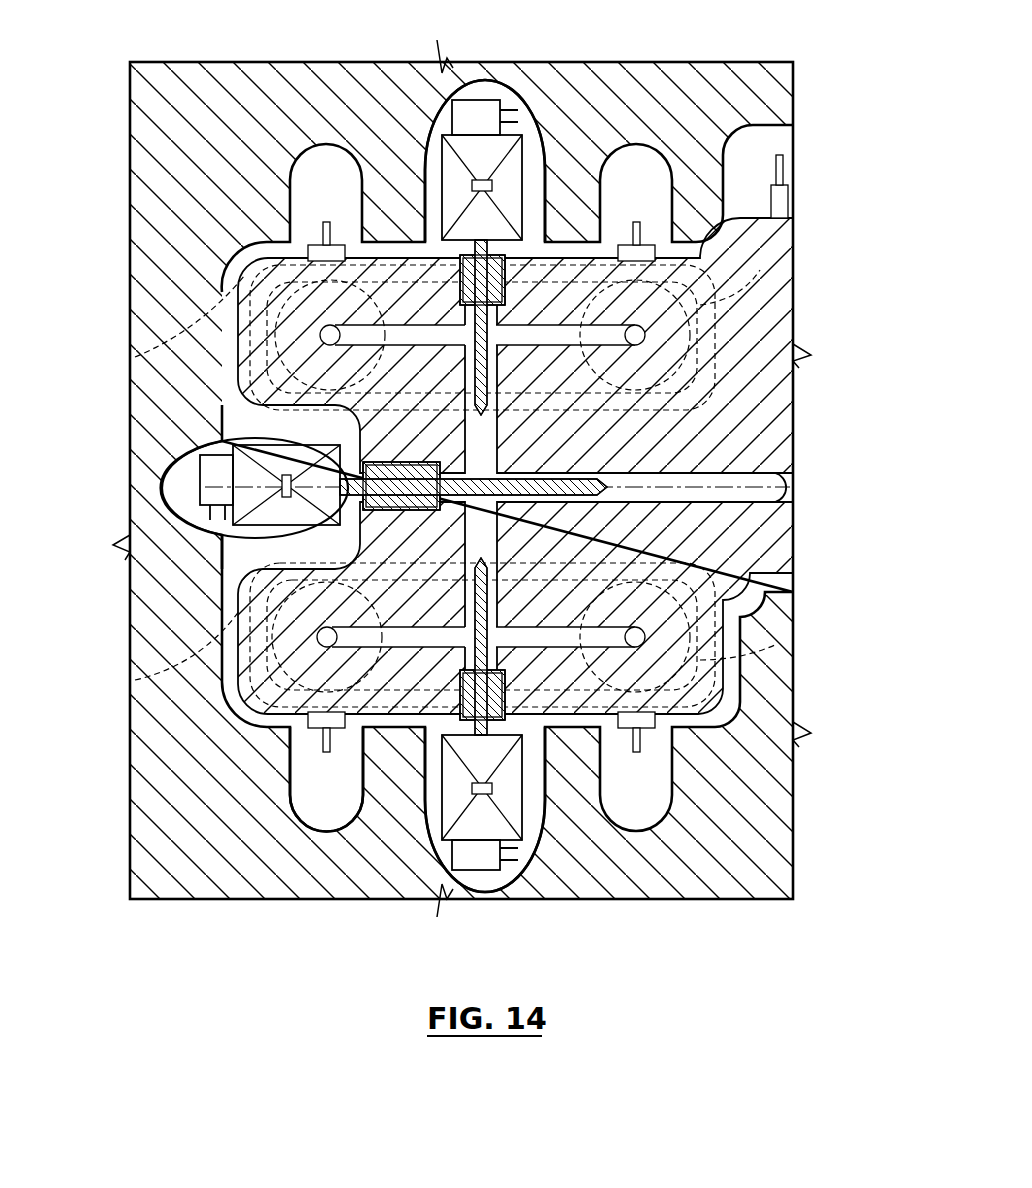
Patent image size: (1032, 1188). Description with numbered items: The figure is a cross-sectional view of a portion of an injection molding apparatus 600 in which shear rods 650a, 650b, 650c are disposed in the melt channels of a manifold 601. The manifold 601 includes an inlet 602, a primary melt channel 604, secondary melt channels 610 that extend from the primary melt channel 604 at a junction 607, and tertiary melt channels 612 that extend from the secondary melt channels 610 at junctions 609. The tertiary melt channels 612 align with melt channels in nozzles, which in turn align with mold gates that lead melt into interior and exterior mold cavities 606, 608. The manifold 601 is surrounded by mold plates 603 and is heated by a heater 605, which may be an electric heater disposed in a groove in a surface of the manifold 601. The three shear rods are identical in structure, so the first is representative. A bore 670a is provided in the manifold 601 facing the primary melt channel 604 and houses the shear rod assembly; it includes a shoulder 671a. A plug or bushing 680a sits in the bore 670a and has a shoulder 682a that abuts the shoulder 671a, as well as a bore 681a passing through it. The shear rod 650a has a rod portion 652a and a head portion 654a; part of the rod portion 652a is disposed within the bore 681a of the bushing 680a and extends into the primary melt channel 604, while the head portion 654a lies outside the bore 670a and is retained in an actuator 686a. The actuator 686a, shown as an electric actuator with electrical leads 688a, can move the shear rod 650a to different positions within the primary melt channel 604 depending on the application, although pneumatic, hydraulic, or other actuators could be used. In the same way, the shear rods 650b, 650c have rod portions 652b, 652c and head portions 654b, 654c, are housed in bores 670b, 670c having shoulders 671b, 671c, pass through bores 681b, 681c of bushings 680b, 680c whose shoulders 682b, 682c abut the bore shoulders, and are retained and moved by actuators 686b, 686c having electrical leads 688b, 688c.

The injection molding apparatus 600 is at (840, 233).
The manifold 601 is at (778, 547).
The inlet 602 is at (790, 485).
The mold plates 603 is at (780, 762).
The primary melt channel 604 is at (742, 473).
The heater 605 is at (812, 360).
The interior mold cavities 606 is at (765, 300).
The junction 607 is at (475, 473).
The exterior mold cavities 608 is at (140, 356).
The junctions 609 is at (597, 362).
The secondary melt channels 610 is at (372, 628).
The tertiary melt channels 612 is at (373, 672).
The shear rod 650a is at (305, 450).
The shear rod 650b is at (522, 790).
The shear rod 650c is at (518, 153).
The rod portion 652a is at (531, 473).
The rod portion 652b is at (497, 594).
The rod portion 652c is at (490, 362).
The head portion 654a is at (172, 462).
The head portion 654b is at (447, 893).
The head portion 654c is at (443, 68).
The bore 670a is at (330, 525).
The bore 670b is at (430, 790).
The bore 670c is at (432, 225).
The shoulder 671a is at (418, 462).
The shoulder 671b is at (470, 678).
The shoulder 671c is at (503, 300).
The bushing 680a is at (400, 440).
The bushing 680b is at (517, 815).
The bushing 680c is at (510, 300).
The bore 681a is at (395, 505).
The bore 681b is at (508, 686).
The bore 681c is at (460, 285).
The shoulder 682a is at (478, 505).
The shoulder 682b is at (520, 705).
The shoulder 682c is at (475, 298).
The actuator 686a is at (198, 485).
The actuator 686b is at (537, 825).
The actuator 686c is at (522, 112).
The electrical leads 688a is at (205, 512).
The electrical leads 688b is at (498, 875).
The electrical leads 688c is at (488, 112).